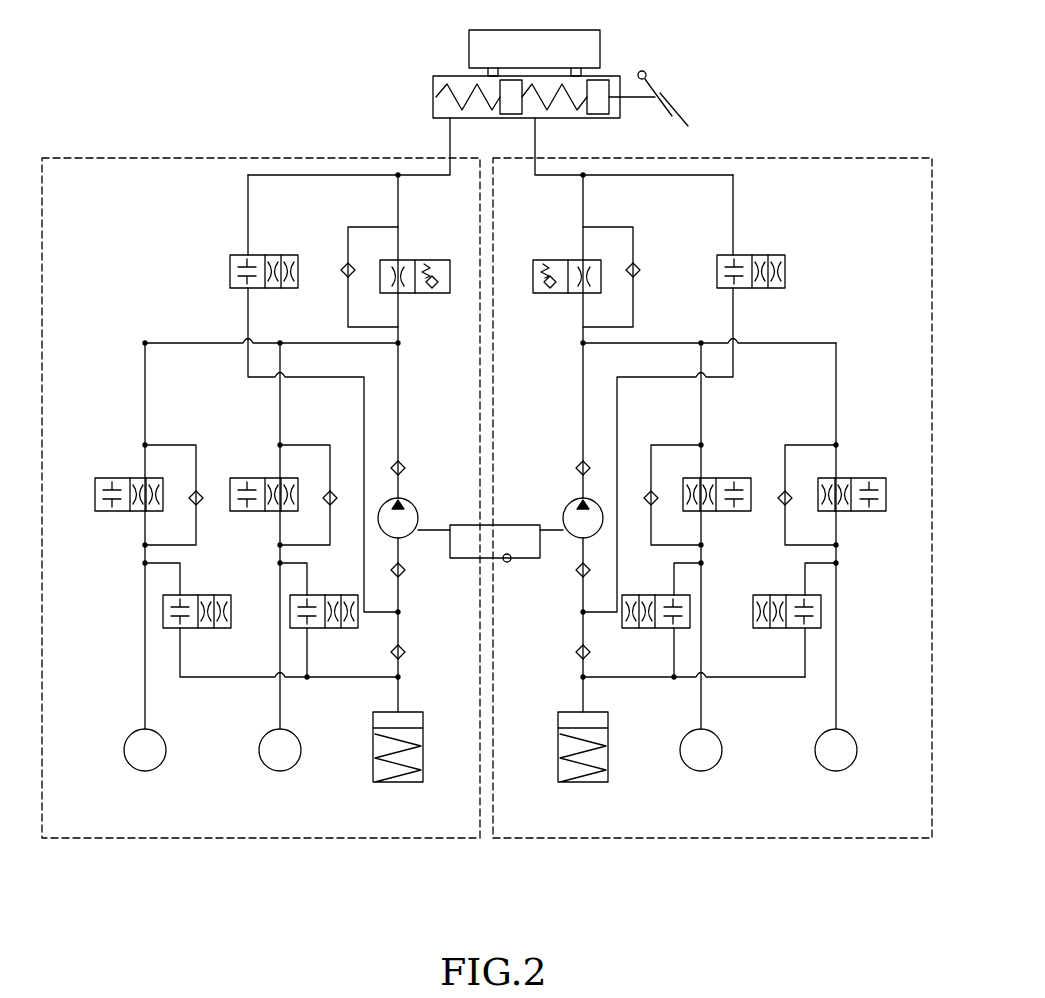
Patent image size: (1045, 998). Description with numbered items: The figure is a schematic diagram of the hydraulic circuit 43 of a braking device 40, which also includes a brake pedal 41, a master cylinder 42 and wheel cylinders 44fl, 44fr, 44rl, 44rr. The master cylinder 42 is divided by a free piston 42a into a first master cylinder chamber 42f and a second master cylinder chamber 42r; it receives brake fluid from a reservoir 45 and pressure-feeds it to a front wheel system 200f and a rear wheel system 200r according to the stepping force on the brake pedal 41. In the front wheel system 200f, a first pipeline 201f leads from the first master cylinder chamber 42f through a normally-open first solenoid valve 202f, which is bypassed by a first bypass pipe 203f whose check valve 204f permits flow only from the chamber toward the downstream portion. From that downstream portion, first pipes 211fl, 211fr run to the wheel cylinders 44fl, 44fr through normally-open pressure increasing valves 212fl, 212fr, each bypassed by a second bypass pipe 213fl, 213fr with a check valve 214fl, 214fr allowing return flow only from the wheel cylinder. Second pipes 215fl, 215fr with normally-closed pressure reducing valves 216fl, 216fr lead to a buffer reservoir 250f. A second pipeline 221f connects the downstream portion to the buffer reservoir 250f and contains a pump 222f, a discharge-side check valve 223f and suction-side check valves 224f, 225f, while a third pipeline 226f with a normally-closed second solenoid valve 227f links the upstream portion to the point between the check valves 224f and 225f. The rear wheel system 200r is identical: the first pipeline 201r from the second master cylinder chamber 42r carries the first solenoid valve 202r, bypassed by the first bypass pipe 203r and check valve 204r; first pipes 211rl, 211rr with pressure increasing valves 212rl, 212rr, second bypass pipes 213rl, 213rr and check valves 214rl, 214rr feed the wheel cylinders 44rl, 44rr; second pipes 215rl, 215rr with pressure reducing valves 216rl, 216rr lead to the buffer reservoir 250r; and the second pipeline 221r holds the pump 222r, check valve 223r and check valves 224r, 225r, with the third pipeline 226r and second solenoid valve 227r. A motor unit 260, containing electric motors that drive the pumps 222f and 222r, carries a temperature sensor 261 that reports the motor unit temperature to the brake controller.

The braking device 40 is at (668, 53).
The brake pedal 41 is at (670, 103).
The master cylinder 42 is at (458, 80).
The second master cylinder chamber 42r is at (442, 100).
The free piston 42a is at (510, 112).
The first master cylinder chamber 42f is at (570, 112).
The hydraulic circuit 43 is at (791, 111).
The reservoir 45 is at (600, 45).
The rear wheel system 200r is at (97, 152).
The front wheel system 200f is at (843, 152).
The first pipeline 201r is at (400, 228).
The first pipeline 201f is at (581, 228).
The first solenoid valve 202r is at (406, 295).
The first solenoid valve 202f is at (556, 295).
The first bypass pipe 203r is at (348, 305).
The first bypass pipe 203f is at (645, 305).
The check valve 204r is at (341, 270).
The check valve 204f is at (640, 270).
The first pipe 211rl is at (145, 380).
The first pipe 211rr is at (280, 402).
The first pipe 211fl is at (701, 394).
The first pipe 211fr is at (836, 410).
The pressure increasing valve 212rl is at (140, 478).
The pressure increasing valve 212rr is at (275, 478).
The pressure increasing valve 212fl is at (710, 478).
The pressure increasing valve 212fr is at (850, 478).
The second bypass pipe 213rl is at (150, 445).
The second bypass pipe 213rr is at (330, 445).
The second bypass pipe 213fl is at (651, 445).
The second bypass pipe 213fr is at (785, 445).
The check valve 214rl is at (203, 506).
The check valve 214rr is at (336, 492).
The check valve 214fl is at (645, 490).
The check valve 214fr is at (778, 506).
The second pipe 215rl is at (228, 677).
The second pipe 215rr is at (312, 677).
The second pipe 215fl is at (672, 677).
The second pipe 215fr is at (752, 677).
The pressure reducing valve 216rl is at (196, 628).
The pressure reducing valve 216rr is at (330, 628).
The pressure reducing valve 216fl is at (650, 628).
The pressure reducing valve 216fr is at (730, 628).
The second pipeline 221r is at (398, 360).
The second pipeline 221f is at (586, 362).
The pump 222r is at (418, 520).
The pump 222f is at (566, 520).
The check valve 223r is at (405, 470).
The check valve 223f is at (576, 470).
The check valve 224r is at (405, 572).
The check valve 224f is at (578, 578).
The check valve 225r is at (405, 654).
The check valve 225f is at (577, 655).
The third pipeline 226r is at (246, 206).
The third pipeline 226f is at (735, 206).
The second solenoid valve 227r is at (230, 268).
The second solenoid valve 227f is at (785, 268).
The buffer reservoir 250r is at (424, 764).
The buffer reservoir 250f is at (567, 764).
The motor unit 260 is at (494, 530).
The temperature sensor 261 is at (508, 564).
The wheel cylinder 44rl is at (162, 766).
The wheel cylinder 44rr is at (297, 766).
The wheel cylinder 44fl is at (685, 766).
The wheel cylinder 44fr is at (820, 766).